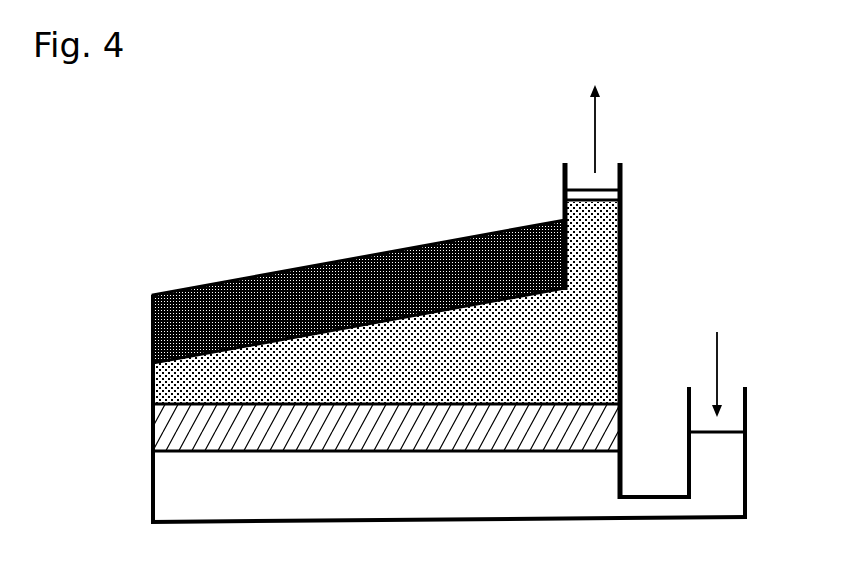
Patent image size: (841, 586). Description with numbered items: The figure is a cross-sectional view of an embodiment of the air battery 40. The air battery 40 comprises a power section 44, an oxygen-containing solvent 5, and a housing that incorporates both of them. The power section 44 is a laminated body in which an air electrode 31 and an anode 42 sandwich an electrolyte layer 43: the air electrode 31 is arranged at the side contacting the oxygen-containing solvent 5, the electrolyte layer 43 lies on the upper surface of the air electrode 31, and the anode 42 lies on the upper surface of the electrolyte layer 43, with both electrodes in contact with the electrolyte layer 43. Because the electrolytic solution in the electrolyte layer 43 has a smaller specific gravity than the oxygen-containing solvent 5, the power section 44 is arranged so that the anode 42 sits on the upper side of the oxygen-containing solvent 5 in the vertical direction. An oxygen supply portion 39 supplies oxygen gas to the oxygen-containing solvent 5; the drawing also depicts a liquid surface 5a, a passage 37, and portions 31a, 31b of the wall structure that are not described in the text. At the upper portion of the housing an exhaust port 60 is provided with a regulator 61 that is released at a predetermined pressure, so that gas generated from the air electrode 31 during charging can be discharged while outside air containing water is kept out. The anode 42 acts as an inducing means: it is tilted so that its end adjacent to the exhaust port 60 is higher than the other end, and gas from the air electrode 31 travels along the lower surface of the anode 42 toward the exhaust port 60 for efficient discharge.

The air battery 40 is at (424, 94).
The power section 44 is at (102, 320).
The anode 42 is at (152, 334).
The electrolyte layer 43 is at (155, 384).
The air electrode 31 is at (155, 437).
The upper portion of wall 31a is at (622, 392).
The lower portion of wall 31b is at (624, 442).
The oxygen-containing solvent 5 is at (178, 493).
The liquid surface 5a is at (737, 428).
The exhaust port 60 is at (600, 185).
The regulator 61 is at (600, 200).
The oxygen supply portion 39 is at (727, 390).
The connecting passage 37 is at (678, 507).